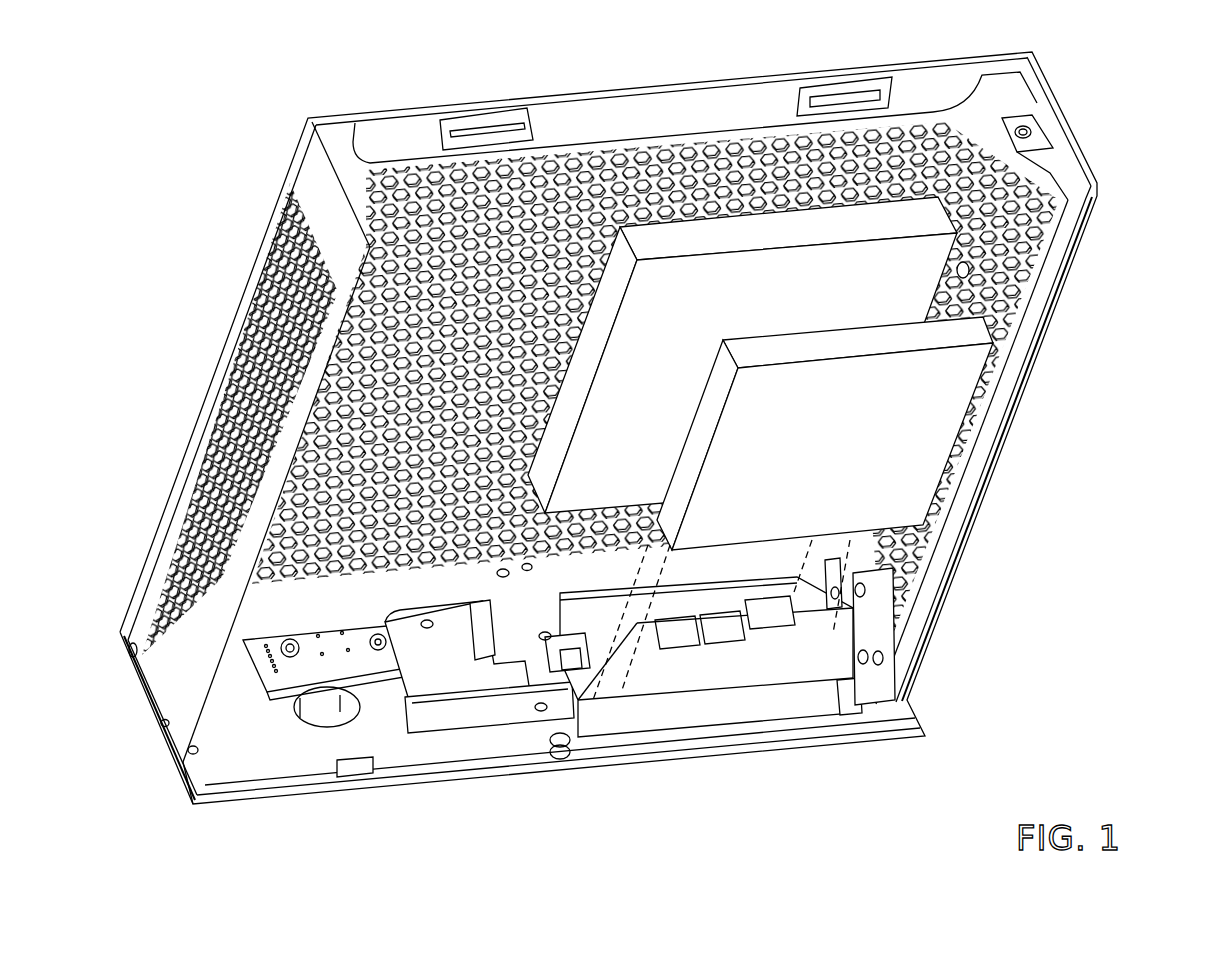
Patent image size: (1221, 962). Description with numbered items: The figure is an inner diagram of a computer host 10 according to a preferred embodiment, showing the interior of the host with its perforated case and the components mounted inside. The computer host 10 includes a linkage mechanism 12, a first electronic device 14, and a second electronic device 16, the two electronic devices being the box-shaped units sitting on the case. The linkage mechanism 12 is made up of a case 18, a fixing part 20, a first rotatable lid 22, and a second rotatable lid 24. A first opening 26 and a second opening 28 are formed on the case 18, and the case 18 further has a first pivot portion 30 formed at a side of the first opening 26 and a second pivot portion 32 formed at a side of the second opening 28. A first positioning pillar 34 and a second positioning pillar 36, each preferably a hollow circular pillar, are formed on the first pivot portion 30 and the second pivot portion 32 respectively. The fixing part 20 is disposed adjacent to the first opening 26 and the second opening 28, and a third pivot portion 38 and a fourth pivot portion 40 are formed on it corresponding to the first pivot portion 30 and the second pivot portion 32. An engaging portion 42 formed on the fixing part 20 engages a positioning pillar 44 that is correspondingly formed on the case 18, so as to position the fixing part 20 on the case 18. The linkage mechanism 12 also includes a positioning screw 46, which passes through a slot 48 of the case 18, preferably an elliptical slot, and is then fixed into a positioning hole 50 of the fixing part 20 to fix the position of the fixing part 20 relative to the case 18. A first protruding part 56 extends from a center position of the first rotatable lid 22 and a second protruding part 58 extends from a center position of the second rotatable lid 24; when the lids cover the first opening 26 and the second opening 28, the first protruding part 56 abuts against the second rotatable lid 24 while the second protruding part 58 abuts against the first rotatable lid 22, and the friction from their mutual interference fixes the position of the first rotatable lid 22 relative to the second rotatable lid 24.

The computer host 10 is at (1098, 96).
The linkage mechanism 12 is at (686, 700).
The first electronic device 14 is at (915, 410).
The second electronic device 16 is at (915, 265).
The case 18 is at (427, 755).
The fixing part 20 is at (452, 692).
The first rotatable lid 22 is at (628, 688).
The second rotatable lid 24 is at (545, 640).
The first opening 26 is at (848, 715).
The second opening 28 is at (752, 603).
The first pivot portion 30 is at (880, 690).
The second pivot portion 32 is at (827, 572).
The first positioning pillar 34 is at (880, 655).
The second positioning pillar 36 is at (862, 590).
The third pivot portion 38 is at (567, 657).
The fourth pivot portion 40 is at (477, 612).
The engaging portion 42 is at (427, 622).
The positioning pillar 44 is at (433, 703).
The positioning screw 46 is at (553, 765).
The slot 48 is at (533, 722).
The positioning hole 50 is at (545, 632).
The first protruding part 56 is at (720, 618).
The second protruding part 58 is at (677, 709).